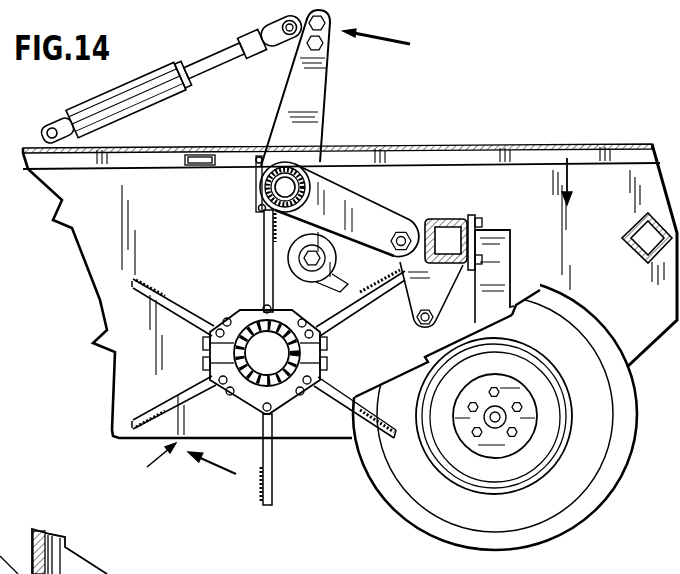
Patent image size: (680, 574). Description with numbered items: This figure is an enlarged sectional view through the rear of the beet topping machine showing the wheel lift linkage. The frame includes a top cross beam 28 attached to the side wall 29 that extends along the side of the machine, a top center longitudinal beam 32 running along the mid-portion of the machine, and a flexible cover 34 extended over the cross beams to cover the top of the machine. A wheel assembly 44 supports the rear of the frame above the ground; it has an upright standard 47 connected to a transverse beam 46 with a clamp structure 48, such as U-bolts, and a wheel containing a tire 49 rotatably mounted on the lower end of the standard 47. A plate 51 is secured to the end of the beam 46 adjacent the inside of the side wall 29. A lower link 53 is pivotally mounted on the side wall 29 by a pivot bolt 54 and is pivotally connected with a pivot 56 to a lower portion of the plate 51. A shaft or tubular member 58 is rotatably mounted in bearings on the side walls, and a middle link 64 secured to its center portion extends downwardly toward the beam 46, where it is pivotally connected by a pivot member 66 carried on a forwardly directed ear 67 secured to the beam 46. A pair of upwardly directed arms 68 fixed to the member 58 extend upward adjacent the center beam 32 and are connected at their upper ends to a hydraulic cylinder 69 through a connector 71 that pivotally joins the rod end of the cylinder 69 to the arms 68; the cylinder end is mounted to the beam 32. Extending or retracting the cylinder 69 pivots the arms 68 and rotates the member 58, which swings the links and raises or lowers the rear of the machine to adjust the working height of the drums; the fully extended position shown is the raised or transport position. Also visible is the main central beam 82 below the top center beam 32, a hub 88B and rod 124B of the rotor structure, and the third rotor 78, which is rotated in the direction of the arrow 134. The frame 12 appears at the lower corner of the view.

The frame 12 is at (12, 548).
The top cross beam 28 is at (181, 183).
The side wall 29 is at (639, 186).
The top center longitudinal beam 32 is at (350, 291).
The flexible cover 34 is at (341, 138).
The wheel assembly 44 is at (503, 414).
The transverse beam 46 is at (446, 225).
The upright standard 47 is at (515, 276).
The clamp structure 48 is at (489, 224).
The tire 49 is at (546, 416).
The plate 51 is at (434, 298).
The lower link 53 is at (324, 295).
The pivot bolt 54 is at (279, 258).
The pivot 56 is at (410, 335).
The tubular member 58 is at (258, 184).
The middle link 64 is at (357, 210).
The pivot member 66 is at (413, 214).
The forwardly directed ear 67 is at (337, 241).
The upwardly directed arm 68 is at (319, 88).
The hydraulic cylinder 69 is at (172, 80).
The connector 71 is at (273, 54).
The third rotor 78 is at (139, 464).
The main central beam 82 is at (69, 530).
The hub 88B is at (268, 322).
The rod 124B is at (303, 459).
The arrow 134 is at (213, 483).